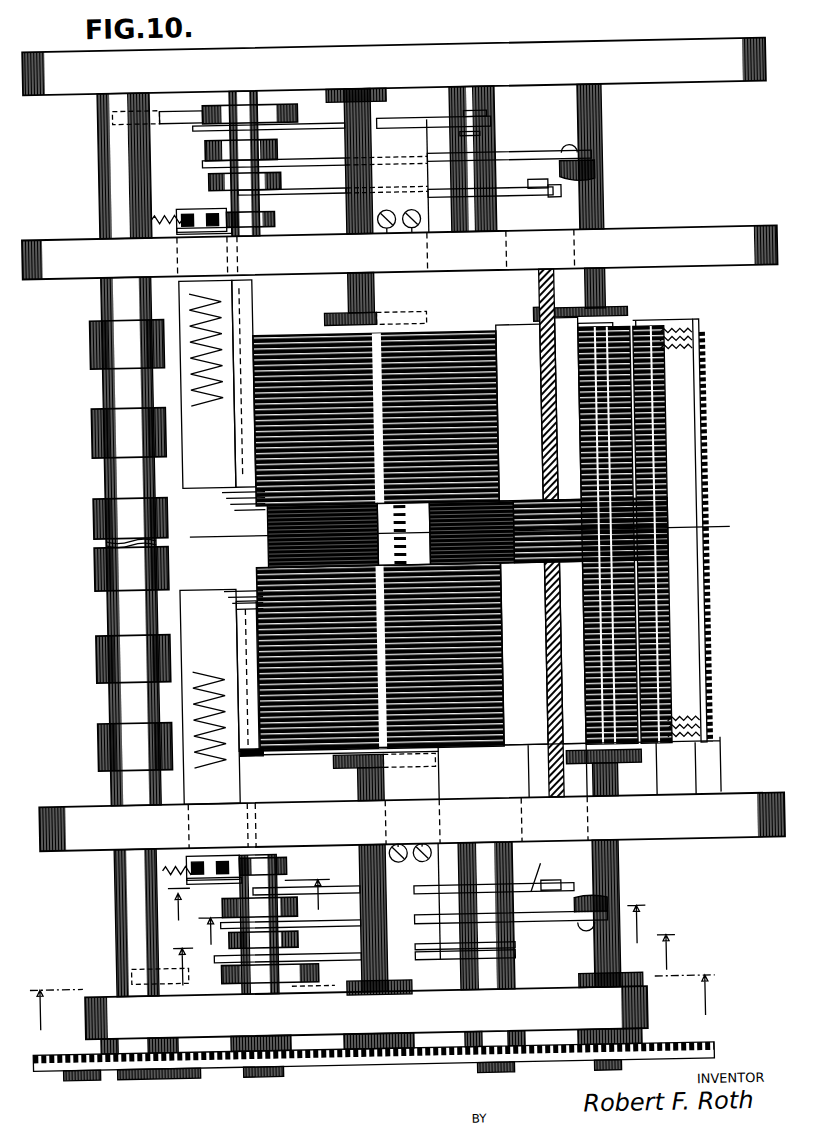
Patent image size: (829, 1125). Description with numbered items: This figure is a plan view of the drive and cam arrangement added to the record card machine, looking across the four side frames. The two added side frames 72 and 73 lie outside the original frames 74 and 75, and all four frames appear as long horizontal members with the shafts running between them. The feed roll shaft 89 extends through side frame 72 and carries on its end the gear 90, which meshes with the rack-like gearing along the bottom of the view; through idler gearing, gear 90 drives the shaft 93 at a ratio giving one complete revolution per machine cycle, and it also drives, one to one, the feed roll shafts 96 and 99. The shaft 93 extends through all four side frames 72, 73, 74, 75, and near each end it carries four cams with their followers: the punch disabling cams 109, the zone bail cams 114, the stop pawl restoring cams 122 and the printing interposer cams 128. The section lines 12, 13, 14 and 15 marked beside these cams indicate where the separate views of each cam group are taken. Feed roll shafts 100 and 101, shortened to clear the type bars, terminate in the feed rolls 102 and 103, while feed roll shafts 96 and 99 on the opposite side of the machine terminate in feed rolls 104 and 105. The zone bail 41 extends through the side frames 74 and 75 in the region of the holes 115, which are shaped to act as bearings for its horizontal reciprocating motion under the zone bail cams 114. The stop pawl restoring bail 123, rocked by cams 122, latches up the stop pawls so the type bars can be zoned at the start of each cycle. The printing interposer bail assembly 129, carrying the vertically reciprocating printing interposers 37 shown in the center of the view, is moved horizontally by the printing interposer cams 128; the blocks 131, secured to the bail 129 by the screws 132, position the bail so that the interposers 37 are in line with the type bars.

The section line 12— 12 is at (249, 892).
The section line 13— 13 is at (422, 920).
The section line 14— 14 is at (424, 952).
The section line 15— 15 is at (372, 992).
The printing interposers 37 is at (400, 538).
The zone bail 41 is at (530, 888).
The side frame 72 is at (636, 1019).
The side frame 73 is at (702, 75).
The original frame 74 is at (747, 806).
The original frame 75 is at (730, 240).
The feed roll shaft 89 is at (110, 912).
The gear 90 is at (42, 1070).
The shaft 93 is at (233, 226).
The feed roll shaft 96 is at (355, 787).
The feed roll shaft 99 is at (605, 786).
The feed roll shaft 100 is at (353, 295).
The feed roll shaft 101 is at (603, 288).
The feed roll 102 is at (329, 316).
The feed roll 103 is at (616, 311).
The feed roll 104 is at (329, 762).
The feed roll 105 is at (640, 762).
The punch disabling cams 109 is at (281, 215).
The zone bail cams 114 is at (288, 180).
The holes 115 is at (563, 250).
The stop pawl restoring cams 122 is at (285, 147).
The stop pawl restoring bail 123 is at (596, 176).
The printing interposer cams 128 is at (306, 112).
The printing interposer bail assembly 129 is at (423, 133).
The blocks 131 is at (403, 210).
The screws 132 is at (409, 232).